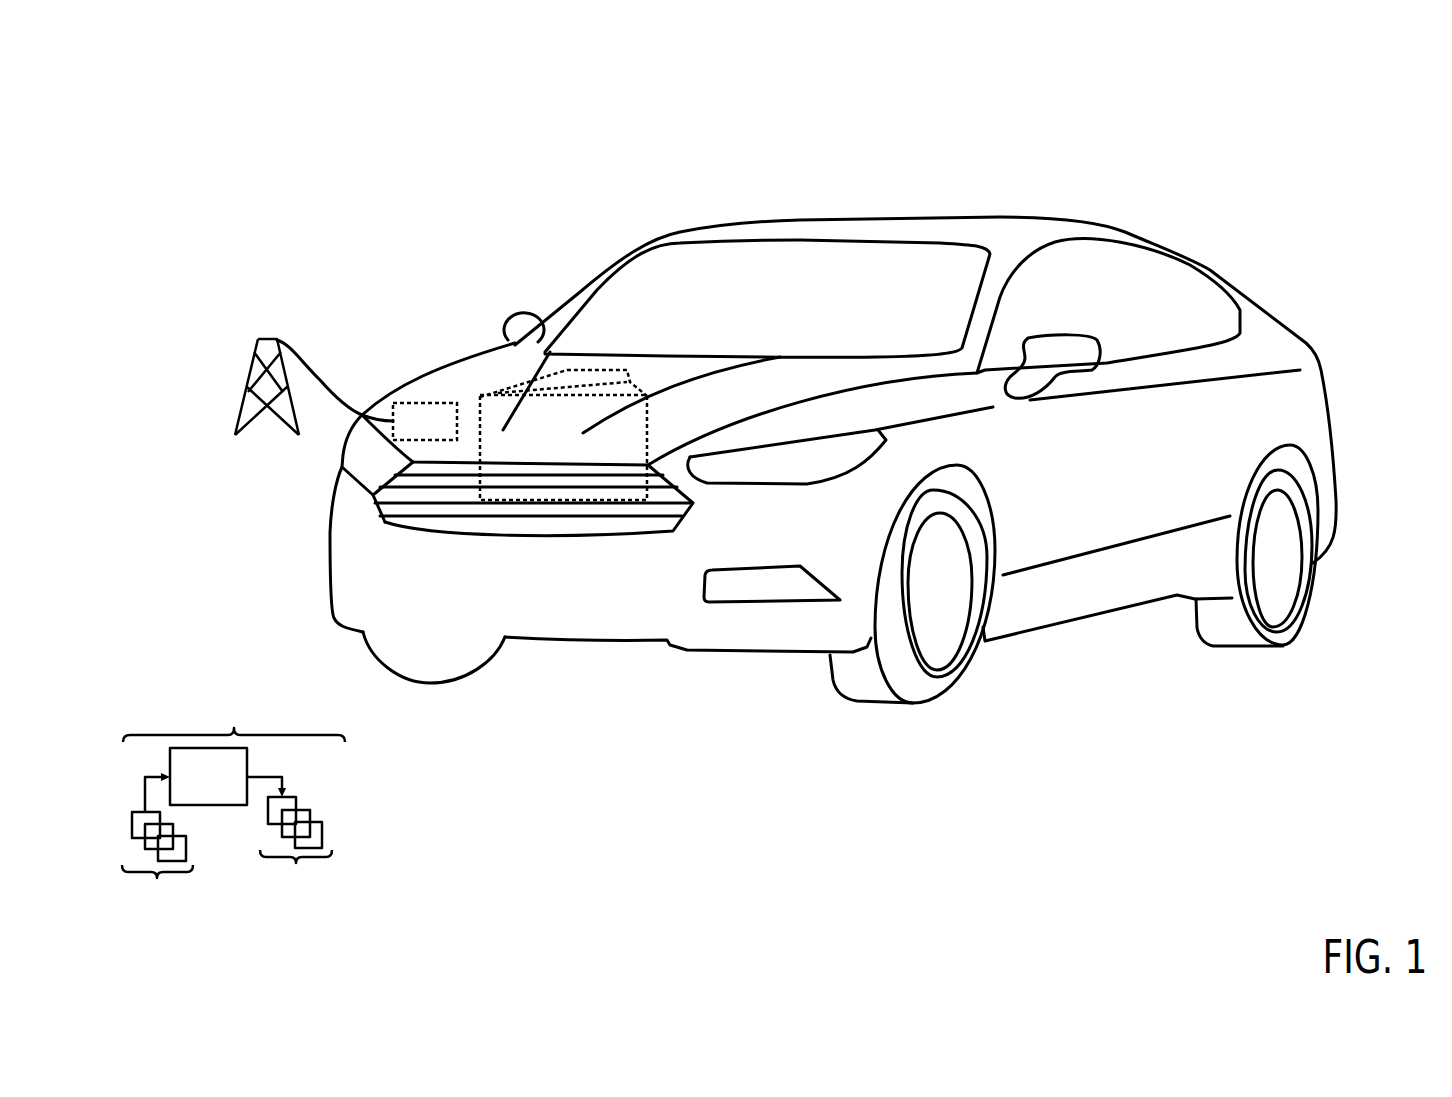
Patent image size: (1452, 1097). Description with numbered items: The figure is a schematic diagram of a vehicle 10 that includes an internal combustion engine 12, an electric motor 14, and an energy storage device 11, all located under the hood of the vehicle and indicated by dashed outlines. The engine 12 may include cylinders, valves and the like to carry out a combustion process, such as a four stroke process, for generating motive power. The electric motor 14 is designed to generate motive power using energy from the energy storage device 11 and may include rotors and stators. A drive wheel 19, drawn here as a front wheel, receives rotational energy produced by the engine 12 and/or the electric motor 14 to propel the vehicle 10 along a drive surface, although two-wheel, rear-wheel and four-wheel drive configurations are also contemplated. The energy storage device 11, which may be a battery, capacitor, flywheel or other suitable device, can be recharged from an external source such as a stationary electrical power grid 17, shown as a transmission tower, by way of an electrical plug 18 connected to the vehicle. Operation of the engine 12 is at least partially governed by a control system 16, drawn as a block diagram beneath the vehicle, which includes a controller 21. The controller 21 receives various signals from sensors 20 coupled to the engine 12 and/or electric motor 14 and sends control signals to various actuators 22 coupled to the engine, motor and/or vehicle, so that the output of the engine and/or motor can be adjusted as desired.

The vehicle 10 is at (247, 84).
The energy storage device 11 is at (414, 434).
The internal combustion engine 12 is at (549, 458).
The electric motor 14 is at (628, 378).
The control system 16 is at (235, 805).
The stationary electrical power grid 17 is at (255, 347).
The electrical plug 18 is at (321, 379).
The drive wheel 19 is at (942, 647).
The sensors 20 is at (159, 876).
The controller 21 is at (197, 790).
The actuators 22 is at (298, 862).